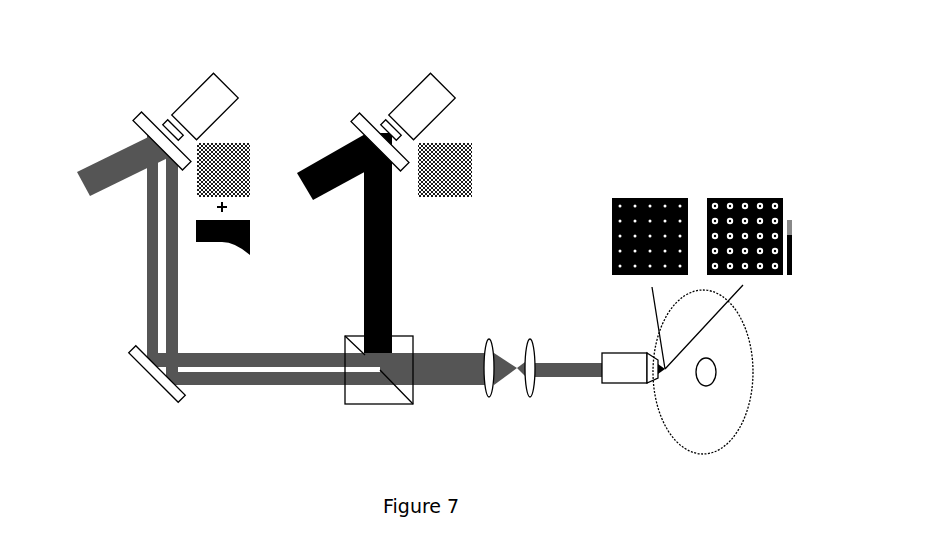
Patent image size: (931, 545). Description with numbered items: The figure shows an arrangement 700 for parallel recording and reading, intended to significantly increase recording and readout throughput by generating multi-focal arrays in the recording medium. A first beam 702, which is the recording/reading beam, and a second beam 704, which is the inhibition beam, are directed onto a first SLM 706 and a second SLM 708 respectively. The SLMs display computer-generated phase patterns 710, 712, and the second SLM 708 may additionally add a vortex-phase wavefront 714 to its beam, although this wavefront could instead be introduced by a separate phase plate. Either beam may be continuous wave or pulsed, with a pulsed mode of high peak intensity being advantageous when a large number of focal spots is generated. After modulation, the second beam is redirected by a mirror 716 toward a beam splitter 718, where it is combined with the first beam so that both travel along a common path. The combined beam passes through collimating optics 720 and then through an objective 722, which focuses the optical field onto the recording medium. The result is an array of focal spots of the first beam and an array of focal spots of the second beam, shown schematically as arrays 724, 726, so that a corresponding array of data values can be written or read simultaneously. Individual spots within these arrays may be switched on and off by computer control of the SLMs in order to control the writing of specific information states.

The arrangement 700 is at (607, 116).
The first beam 702 is at (327, 160).
The second beam 704 is at (110, 148).
The first SLM 706 is at (428, 85).
The second SLM 708 is at (190, 100).
The phase pattern 710 is at (480, 176).
The phase pattern 712 is at (257, 159).
The vortex-phase wavefront 714 is at (260, 241).
The mirror 716 is at (153, 378).
The beam splitter 718 is at (358, 404).
The collimating optics 720 is at (529, 404).
The objective 722 is at (603, 354).
The array of focal spots 724 is at (624, 187).
The array of focal spots 726 is at (719, 187).